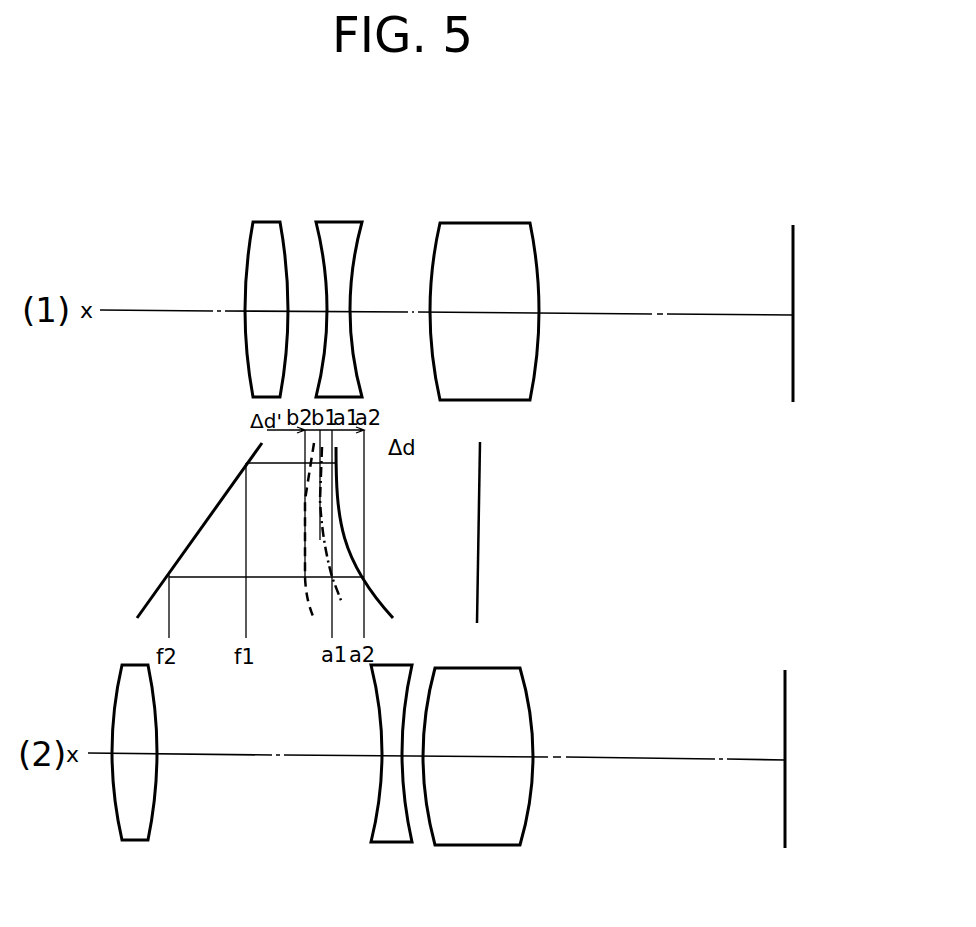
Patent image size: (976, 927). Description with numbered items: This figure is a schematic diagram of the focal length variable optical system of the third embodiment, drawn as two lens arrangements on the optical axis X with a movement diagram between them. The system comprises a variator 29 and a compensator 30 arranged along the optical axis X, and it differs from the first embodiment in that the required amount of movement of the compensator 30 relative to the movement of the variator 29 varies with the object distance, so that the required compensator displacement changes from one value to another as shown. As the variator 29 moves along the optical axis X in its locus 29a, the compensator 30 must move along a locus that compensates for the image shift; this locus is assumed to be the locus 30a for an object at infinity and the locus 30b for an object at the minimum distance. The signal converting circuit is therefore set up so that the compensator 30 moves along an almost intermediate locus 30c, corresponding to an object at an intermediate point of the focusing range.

The variator 29 is at (266, 221).
The compensator 30 is at (338, 221).
The locus 29a is at (228, 490).
The locus 30a is at (337, 482).
The locus 30b is at (302, 530).
The locus 30c is at (325, 545).